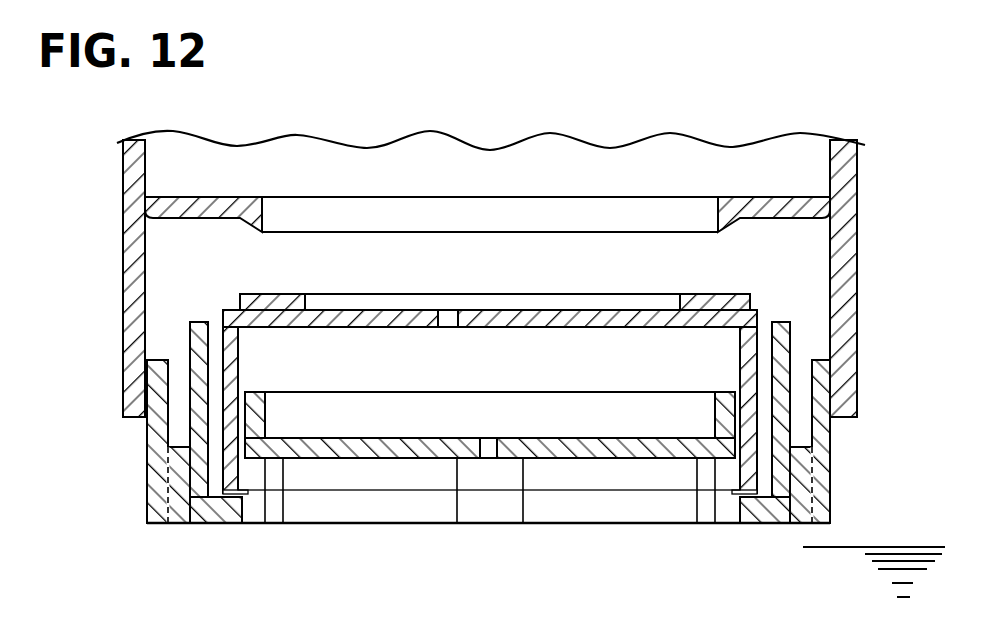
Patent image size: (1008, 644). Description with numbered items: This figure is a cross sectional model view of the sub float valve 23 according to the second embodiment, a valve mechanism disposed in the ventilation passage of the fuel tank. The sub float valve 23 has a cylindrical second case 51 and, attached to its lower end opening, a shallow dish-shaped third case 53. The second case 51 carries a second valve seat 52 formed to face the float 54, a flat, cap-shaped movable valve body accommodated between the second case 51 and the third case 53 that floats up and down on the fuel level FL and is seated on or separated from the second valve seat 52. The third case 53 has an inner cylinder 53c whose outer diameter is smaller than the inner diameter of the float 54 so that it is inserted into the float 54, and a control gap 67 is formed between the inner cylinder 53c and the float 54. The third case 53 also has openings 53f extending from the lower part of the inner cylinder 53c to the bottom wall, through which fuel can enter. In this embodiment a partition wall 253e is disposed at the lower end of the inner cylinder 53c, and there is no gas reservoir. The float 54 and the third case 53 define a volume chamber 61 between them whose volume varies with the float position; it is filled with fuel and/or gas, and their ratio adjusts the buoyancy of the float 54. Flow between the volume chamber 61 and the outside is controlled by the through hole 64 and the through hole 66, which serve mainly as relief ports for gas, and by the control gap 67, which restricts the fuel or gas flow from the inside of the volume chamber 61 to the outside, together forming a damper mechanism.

The sub float valve 23 is at (222, 163).
The second case 51 is at (123, 178).
The second valve seat 52 is at (262, 232).
The third case 53 is at (147, 493).
The inner cylinder 53c is at (268, 412).
The opening 53f is at (720, 458).
The partition wall 253e is at (402, 458).
The float 54 is at (200, 297).
The volume chamber 61 is at (316, 370).
The through hole 64 is at (441, 310).
The through hole 66 is at (492, 438).
The control gap 67 is at (256, 370).
The fuel level FL is at (923, 547).